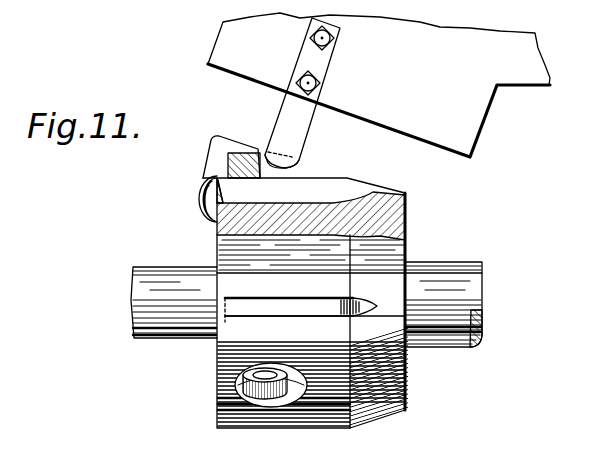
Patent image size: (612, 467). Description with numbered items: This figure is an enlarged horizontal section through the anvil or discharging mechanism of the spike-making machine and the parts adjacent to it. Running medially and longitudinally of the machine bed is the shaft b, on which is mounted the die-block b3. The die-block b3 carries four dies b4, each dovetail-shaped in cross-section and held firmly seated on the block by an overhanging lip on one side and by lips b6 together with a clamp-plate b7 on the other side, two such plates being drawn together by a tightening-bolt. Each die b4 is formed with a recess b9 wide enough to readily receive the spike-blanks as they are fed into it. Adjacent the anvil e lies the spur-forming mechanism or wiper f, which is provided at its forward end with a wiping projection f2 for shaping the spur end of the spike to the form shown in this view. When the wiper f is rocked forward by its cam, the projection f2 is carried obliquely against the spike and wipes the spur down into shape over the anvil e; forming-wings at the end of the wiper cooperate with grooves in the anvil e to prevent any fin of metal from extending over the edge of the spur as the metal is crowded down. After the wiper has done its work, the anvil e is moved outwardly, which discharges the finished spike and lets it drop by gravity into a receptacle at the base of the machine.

The wiper f is at (379, 85).
The wiping projection f2 is at (297, 132).
The anvil e is at (300, 159).
The shaft b is at (453, 265).
The die-block b3 is at (402, 252).
The die b4 is at (232, 287).
The recess b9 is at (260, 307).
The lip b6 is at (217, 416).
The clamp-plate b7 is at (215, 388).